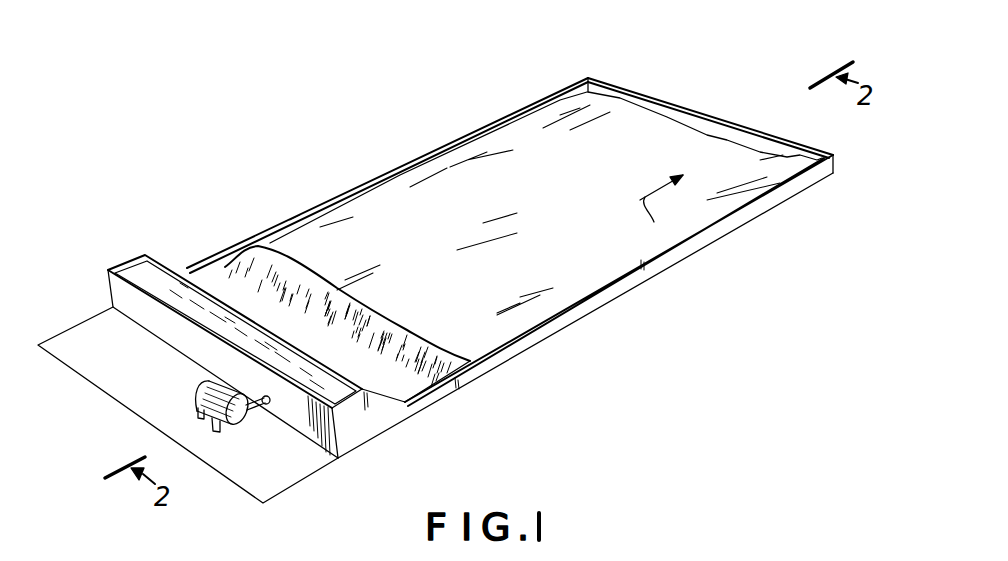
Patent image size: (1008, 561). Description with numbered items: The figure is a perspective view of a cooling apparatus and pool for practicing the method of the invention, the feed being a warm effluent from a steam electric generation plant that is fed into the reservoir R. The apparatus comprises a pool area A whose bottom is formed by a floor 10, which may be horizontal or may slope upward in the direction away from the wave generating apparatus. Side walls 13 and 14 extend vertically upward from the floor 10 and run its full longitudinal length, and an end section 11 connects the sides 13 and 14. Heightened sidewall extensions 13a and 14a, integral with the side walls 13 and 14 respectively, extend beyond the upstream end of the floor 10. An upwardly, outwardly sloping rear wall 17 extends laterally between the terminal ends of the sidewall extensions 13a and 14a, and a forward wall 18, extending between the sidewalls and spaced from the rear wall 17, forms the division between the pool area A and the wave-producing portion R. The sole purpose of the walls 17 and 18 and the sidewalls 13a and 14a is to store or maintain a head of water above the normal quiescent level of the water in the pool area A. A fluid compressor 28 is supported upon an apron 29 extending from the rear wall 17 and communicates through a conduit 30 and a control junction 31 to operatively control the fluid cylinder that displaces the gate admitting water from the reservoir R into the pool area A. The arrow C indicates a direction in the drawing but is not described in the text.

The floor 10 is at (597, 211).
The end section 11 is at (727, 122).
The side wall 13 is at (424, 156).
The sidewall extension 13a is at (114, 266).
The side wall 14 is at (690, 252).
The sidewall extension 14a is at (365, 420).
The rear wall 17 is at (321, 437).
The forward wall 18 is at (166, 265).
The fluid compressor 28 is at (200, 423).
The apron 29 is at (105, 392).
The conduit 30 is at (245, 424).
The control junction 31 is at (266, 405).
The pool area A is at (443, 243).
The direction of travel C is at (661, 204).
The reservoir R is at (200, 313).